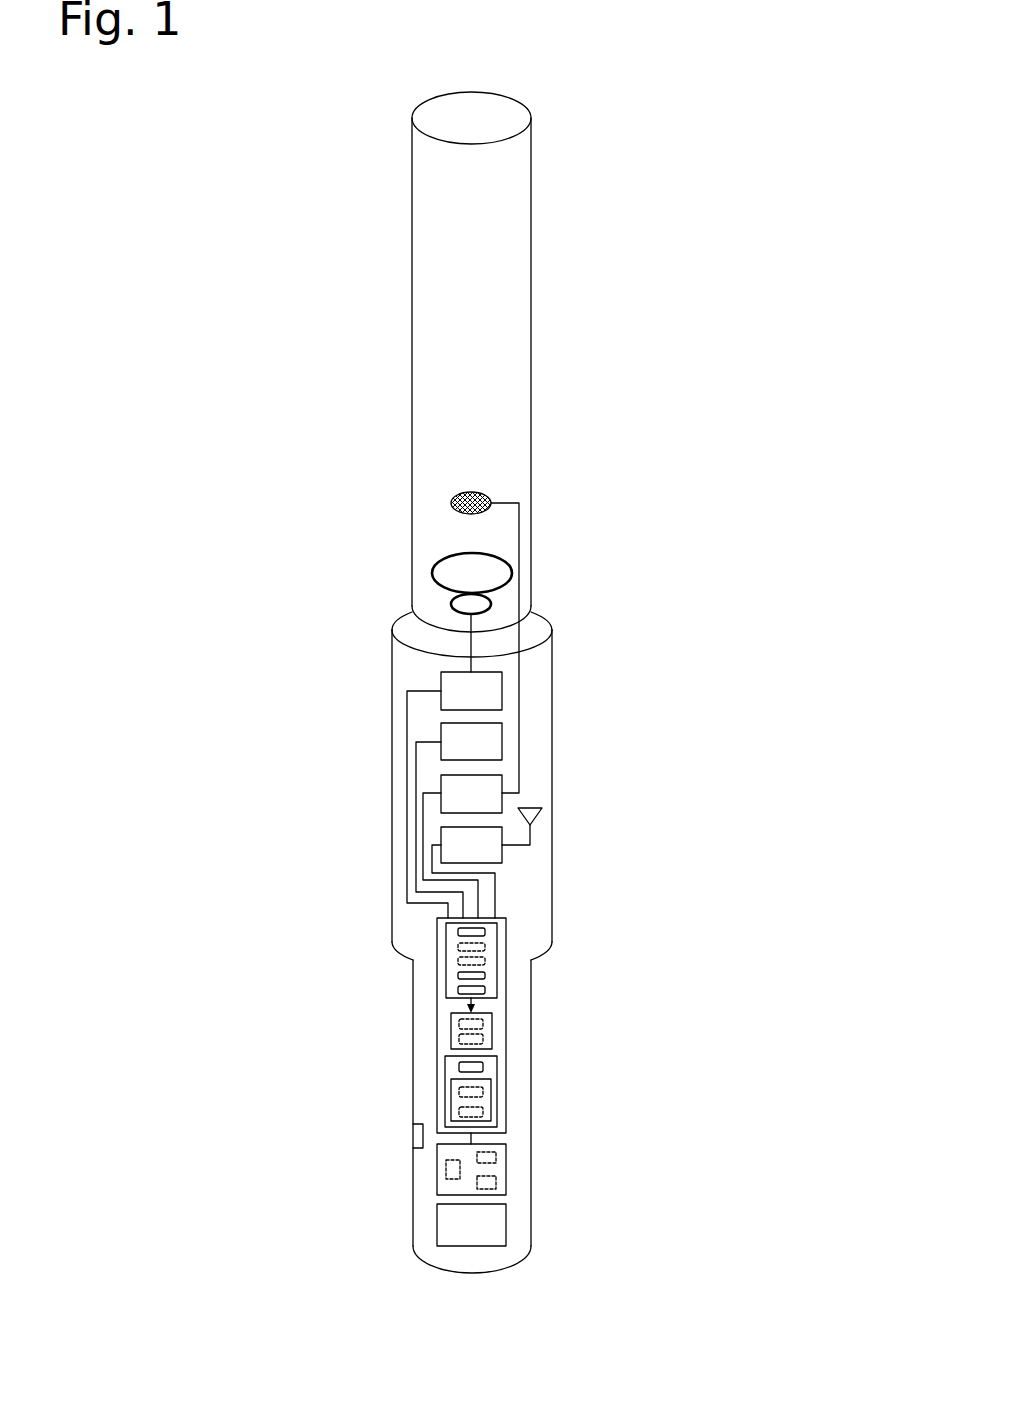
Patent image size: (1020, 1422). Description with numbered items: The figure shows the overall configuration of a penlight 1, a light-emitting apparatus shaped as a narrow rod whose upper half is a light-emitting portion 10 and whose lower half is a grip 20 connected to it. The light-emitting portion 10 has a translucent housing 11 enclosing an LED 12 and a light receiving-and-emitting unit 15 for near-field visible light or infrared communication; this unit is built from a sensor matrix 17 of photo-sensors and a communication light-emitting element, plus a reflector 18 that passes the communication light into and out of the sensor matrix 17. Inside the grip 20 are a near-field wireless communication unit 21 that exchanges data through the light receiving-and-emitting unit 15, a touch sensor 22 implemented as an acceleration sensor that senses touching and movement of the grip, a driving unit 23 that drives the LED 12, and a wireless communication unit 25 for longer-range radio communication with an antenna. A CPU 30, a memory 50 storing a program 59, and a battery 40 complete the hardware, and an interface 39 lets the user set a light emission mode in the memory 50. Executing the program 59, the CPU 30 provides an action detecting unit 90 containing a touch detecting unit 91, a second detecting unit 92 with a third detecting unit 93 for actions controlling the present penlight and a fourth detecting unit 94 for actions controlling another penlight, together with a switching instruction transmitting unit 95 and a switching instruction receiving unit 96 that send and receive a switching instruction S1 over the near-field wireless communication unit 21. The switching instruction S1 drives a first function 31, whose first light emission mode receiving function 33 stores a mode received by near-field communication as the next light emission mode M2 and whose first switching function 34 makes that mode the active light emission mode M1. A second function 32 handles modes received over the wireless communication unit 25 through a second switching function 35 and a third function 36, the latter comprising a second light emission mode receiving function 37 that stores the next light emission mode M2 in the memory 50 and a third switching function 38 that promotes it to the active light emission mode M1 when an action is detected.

The penlight 1 is at (719, 512).
The light-emitting portion 10 is at (382, 361).
The housing 11 is at (515, 342).
The LED 12 is at (483, 494).
The light receiving-and-emitting unit 15 is at (383, 557).
The sensor matrix 17 is at (455, 602).
The reflector 18 is at (455, 572).
The grip 20 is at (325, 645).
The near-field wireless communication unit 21 is at (455, 696).
The touch sensor 22 is at (455, 742).
The driving unit 23 is at (455, 790).
The wireless communication unit 25 is at (455, 853).
The CPU 30 is at (443, 1008).
The first function 31 is at (492, 1032).
The second function 32 is at (491, 1072).
The first light emission mode receiving function 33 is at (484, 1024).
The first switching function 34 is at (484, 1040).
The second switching function 35 is at (460, 1062).
The third function 36 is at (455, 1098).
The second light emission mode receiving function 37 is at (484, 1092).
The third switching function 38 is at (484, 1112).
The interface 39 is at (414, 1137).
The battery 40 is at (450, 1220).
The memory 50 is at (450, 1153).
The program 59 is at (450, 1175).
The action detecting unit 90 is at (500, 932).
The touch detecting unit 91 is at (446, 930).
The second detecting unit 92 is at (458, 953).
The third detecting unit 93 is at (458, 948).
The fourth detecting unit 94 is at (460, 965).
The switching instruction transmitting unit 95 is at (460, 978).
The switching instruction receiving unit 96 is at (500, 990).
The switching instruction S1 is at (500, 1000).
The active light emission mode M1 is at (496, 1158).
The next light emission mode M2 is at (496, 1187).